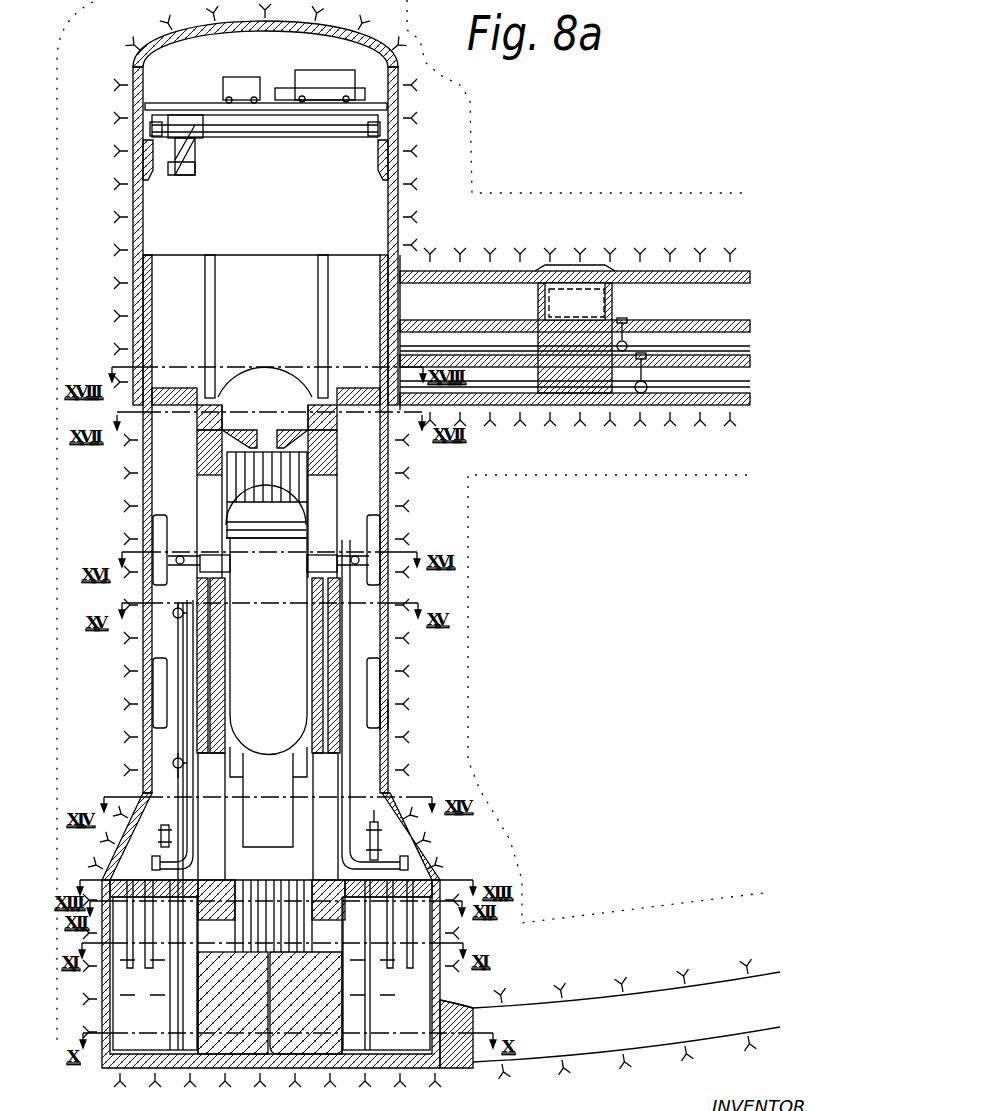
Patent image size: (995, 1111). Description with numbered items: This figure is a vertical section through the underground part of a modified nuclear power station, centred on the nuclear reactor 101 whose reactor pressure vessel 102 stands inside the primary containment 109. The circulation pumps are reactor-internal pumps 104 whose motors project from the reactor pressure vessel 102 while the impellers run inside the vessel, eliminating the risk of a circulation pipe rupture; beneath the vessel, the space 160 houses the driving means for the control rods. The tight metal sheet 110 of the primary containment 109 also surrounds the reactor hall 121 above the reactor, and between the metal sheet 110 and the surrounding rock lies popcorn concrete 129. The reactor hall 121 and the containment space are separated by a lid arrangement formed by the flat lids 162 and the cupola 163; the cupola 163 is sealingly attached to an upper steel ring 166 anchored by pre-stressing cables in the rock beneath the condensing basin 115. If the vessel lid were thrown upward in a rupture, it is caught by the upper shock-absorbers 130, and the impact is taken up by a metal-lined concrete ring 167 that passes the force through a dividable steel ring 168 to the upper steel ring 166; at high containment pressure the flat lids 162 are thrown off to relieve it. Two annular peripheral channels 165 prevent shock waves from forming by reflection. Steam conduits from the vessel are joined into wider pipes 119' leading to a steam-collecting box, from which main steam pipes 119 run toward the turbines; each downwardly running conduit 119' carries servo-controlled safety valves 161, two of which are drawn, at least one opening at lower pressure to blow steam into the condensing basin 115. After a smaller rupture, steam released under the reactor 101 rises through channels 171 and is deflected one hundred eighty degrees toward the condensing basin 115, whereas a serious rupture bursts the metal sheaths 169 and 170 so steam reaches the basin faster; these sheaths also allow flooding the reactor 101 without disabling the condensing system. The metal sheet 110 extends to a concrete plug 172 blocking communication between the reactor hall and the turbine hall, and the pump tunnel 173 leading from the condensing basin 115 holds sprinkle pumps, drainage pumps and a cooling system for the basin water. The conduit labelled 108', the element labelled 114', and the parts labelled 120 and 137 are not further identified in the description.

The reactor hall 121 is at (355, 208).
The popcorn concrete 129 is at (147, 492).
The flat lids 162 is at (266, 385).
The cupola 163 is at (268, 373).
The upper steel ring 166 is at (218, 398).
The dividable steel ring 168 is at (200, 427).
The metal-lined concrete ring 167 is at (203, 455).
The upper shock-absorbers 130 is at (293, 485).
The vessel flange 114' is at (340, 510).
The annular peripheral channels 165 is at (372, 530).
The nozzle 108' is at (317, 576).
The wider pipes 119' is at (382, 614).
The tight metal sheet 110 is at (390, 698).
The primary containment vessel 109 is at (388, 714).
The reactor pressure vessel 102 is at (285, 717).
The reactor-internal pumps 104 is at (302, 758).
The space for control rod driving means 160 is at (280, 783).
The nuclear reactor 101 is at (268, 627).
The servo-controlled safety valves 161 is at (173, 618).
The channels 171 is at (207, 660).
The valve 120 is at (378, 838).
The metal sheath 169 is at (410, 863).
The metal sheath 170 is at (432, 936).
The condensing basin 115 is at (407, 982).
The pump tunnel 173 is at (657, 1012).
The main steam pipes 119 is at (575, 350).
The concrete plug 172 is at (577, 397).
The pipe 137 is at (700, 347).